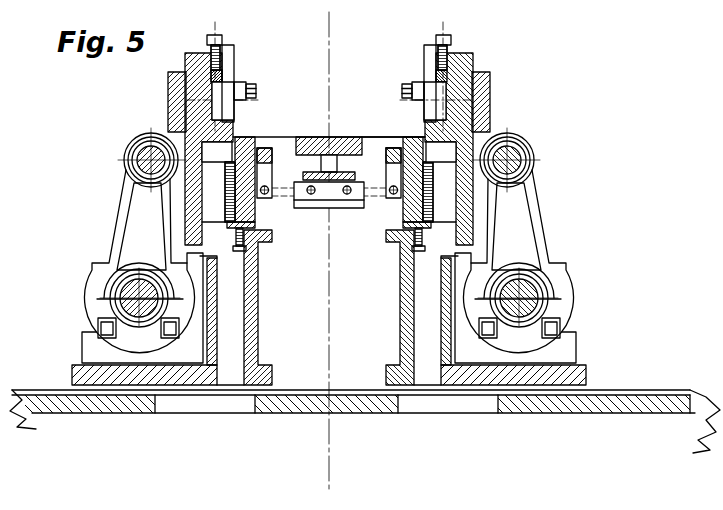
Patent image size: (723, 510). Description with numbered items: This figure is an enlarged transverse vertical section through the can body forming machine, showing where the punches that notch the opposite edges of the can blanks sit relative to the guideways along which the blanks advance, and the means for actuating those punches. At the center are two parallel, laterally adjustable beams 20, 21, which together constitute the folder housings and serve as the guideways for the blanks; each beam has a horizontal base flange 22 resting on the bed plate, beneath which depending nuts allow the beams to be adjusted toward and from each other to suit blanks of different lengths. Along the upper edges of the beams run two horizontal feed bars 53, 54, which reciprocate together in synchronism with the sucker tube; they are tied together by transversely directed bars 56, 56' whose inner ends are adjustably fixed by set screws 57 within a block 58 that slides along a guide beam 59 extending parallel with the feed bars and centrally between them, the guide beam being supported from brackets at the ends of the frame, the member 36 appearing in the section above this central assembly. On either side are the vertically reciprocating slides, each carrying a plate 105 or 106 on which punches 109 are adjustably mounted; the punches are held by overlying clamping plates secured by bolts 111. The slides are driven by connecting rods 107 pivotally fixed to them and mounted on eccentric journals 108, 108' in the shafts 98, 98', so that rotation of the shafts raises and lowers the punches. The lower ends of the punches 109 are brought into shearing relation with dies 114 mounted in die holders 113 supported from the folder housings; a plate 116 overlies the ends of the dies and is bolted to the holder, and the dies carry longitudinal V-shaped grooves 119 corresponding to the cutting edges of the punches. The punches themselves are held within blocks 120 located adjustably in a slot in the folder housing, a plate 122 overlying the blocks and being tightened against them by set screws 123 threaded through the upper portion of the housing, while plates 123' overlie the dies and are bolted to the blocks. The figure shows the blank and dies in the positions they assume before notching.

The beam 20 is at (257, 303).
The beam 21 is at (400, 296).
The horizontal base flange 22 is at (87, 373).
The cross bar 36 is at (318, 137).
The feed bar 53 is at (272, 148).
The feed bar 54 is at (383, 137).
The transversely directed bar 56 is at (273, 186).
The transversely directed bar 56' is at (378, 206).
The set screw 57 is at (312, 194).
The block 58 is at (340, 198).
The guide beam 59 is at (333, 158).
The shaft 98 is at (123, 308).
The shaft 98' is at (536, 308).
The plate 105 is at (197, 97).
The plate 106 is at (462, 110).
The connecting rod 107 is at (135, 218).
The eccentric journal 108 is at (112, 300).
The eccentric journal 108' is at (549, 300).
The punch 109 is at (233, 60).
The bolt 111 is at (256, 92).
The die holder 113 is at (232, 183).
The die 114 is at (202, 153).
The plate 116 is at (188, 202).
The V-shaped groove 119 is at (233, 137).
The block 120 is at (185, 86).
The plate 122 is at (211, 74).
The set screw 123 is at (307, 48).
The plate 123' is at (251, 87).